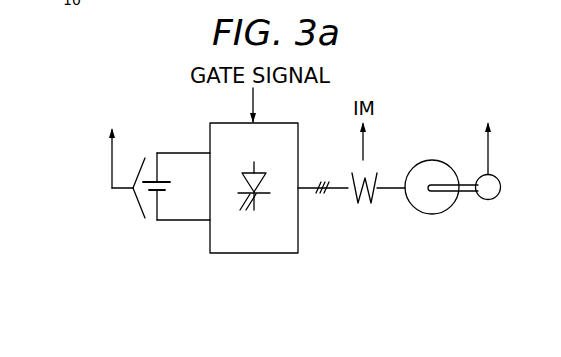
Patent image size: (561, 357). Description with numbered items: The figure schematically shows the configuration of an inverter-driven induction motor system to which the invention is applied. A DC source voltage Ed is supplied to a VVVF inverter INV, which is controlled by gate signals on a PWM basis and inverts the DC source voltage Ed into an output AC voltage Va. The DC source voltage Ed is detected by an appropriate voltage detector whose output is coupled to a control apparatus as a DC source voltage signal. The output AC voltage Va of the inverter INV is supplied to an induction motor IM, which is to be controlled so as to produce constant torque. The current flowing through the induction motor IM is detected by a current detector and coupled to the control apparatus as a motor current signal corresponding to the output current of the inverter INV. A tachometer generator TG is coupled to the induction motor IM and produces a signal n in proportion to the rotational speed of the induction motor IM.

The DC source voltage Ed is at (121, 158).
The VVVF inverter INV is at (254, 200).
The output AC voltage Va is at (323, 202).
The induction motor IM is at (441, 198).
The tachometer generator TG is at (493, 200).
The speed signal n is at (488, 136).